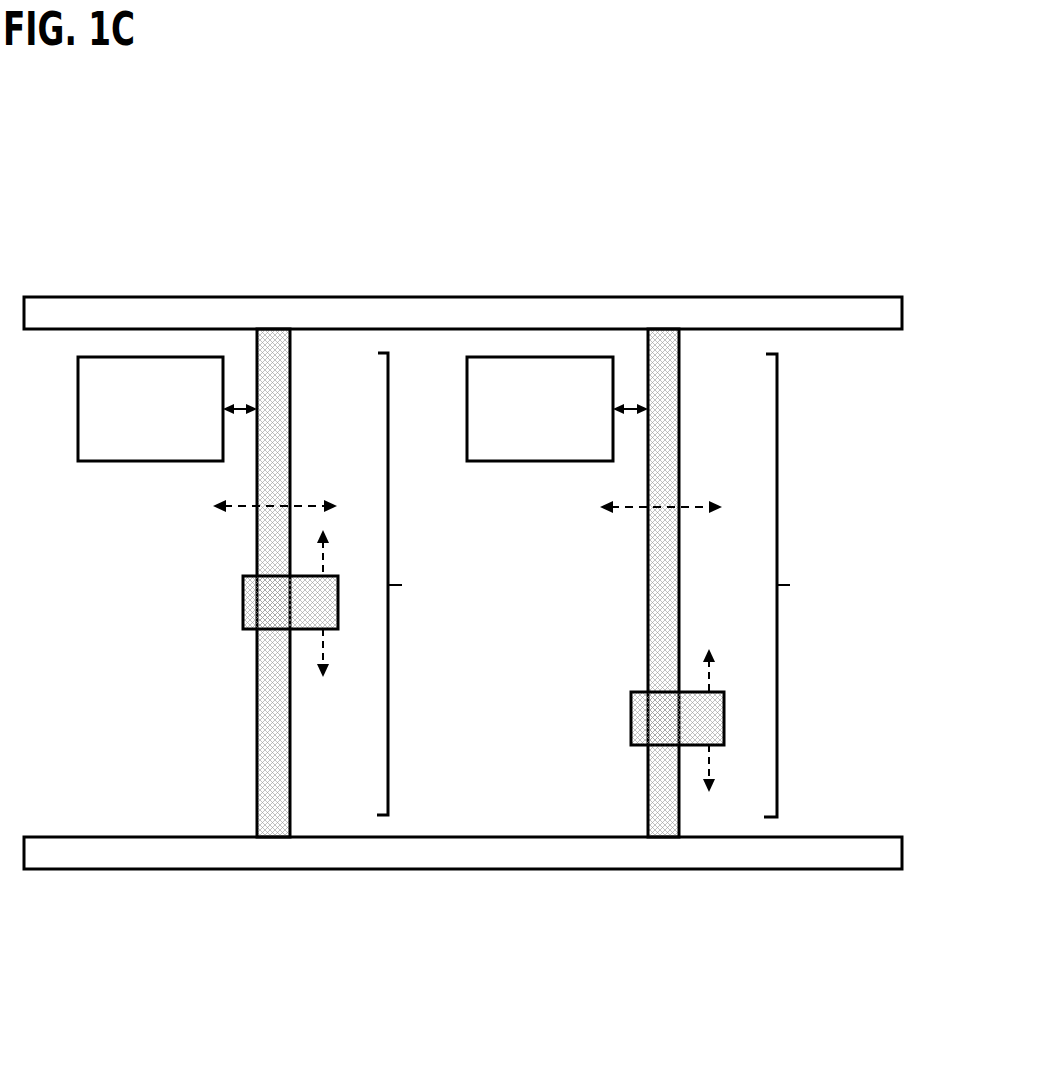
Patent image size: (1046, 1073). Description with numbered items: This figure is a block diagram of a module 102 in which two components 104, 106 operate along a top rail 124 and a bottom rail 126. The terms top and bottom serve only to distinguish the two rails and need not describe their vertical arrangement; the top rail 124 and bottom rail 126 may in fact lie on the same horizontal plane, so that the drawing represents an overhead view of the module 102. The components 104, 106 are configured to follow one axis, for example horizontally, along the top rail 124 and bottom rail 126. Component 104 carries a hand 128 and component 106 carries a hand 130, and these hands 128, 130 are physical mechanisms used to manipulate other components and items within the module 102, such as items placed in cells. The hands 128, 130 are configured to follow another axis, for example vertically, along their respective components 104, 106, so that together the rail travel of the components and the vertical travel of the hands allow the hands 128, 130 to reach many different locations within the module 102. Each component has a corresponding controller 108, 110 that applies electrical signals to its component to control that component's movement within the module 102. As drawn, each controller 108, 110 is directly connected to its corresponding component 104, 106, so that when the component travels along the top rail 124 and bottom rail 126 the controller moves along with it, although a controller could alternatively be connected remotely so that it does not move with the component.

The module 102 is at (473, 507).
The component 104 is at (307, 583).
The component 106 is at (694, 583).
The controller 108 is at (167, 409).
The controller 110 is at (557, 409).
The top rail 124 is at (461, 290).
The bottom rail 126 is at (463, 877).
The hand 128 is at (235, 601).
The hand 130 is at (622, 716).